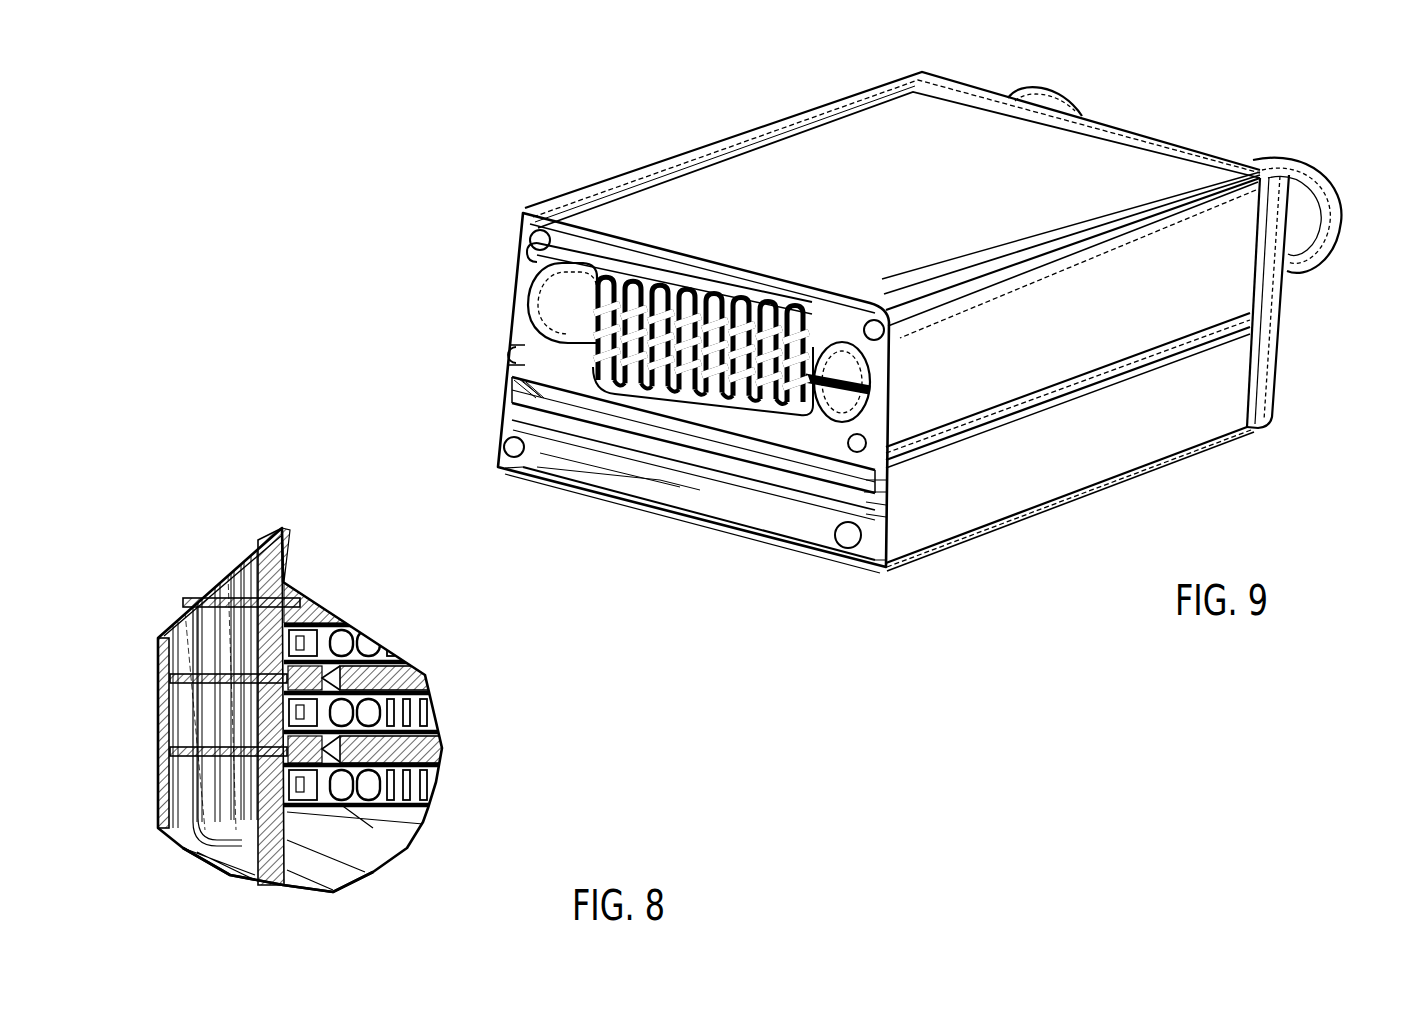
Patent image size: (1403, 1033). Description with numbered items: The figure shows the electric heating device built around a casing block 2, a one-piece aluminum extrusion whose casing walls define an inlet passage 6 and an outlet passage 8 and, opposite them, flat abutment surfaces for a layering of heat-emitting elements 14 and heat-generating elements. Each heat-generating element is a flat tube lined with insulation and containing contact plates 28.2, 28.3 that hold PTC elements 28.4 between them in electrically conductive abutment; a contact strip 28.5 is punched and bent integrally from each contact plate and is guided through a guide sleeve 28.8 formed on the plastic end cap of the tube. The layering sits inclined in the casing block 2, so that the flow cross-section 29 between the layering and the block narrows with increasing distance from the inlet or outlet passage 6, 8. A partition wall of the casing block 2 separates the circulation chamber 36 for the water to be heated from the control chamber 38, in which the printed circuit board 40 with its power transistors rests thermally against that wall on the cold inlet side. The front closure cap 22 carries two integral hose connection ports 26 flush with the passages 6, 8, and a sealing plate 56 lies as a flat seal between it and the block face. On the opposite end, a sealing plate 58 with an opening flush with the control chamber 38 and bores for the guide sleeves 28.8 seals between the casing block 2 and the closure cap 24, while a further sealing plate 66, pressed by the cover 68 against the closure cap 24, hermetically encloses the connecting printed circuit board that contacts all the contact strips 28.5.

In FIG. 9, the casing block 2 is at (748, 120).
In FIG. 9, the inlet passage 6 is at (562, 316).
In FIG. 9, the outlet passage 8 is at (833, 368).
In FIG. 8, the heat-emitting element 14 is at (432, 792).
In FIG. 9, the closure cap 22 is at (1264, 400).
In FIG. 8, the closure cap 24 is at (235, 868).
In FIG. 9, the connection port 26 is at (1072, 100).
In FIG. 8, the contact plate 28.2 is at (445, 727).
In FIG. 8, the contact plate 28.3 is at (447, 765).
In FIG. 8, the PTC element 28.4 is at (447, 750).
In FIG. 8, the contact strip 28.5 is at (160, 752).
In FIG. 8, the guide sleeve 28.8 is at (288, 576).
In FIG. 9, the flow cross-section 29 is at (712, 406).
In FIG. 9, the circulation chamber 36 is at (640, 388).
In FIG. 9, the control chamber 38 is at (678, 477).
In FIG. 9, the printed circuit board 40 is at (740, 463).
In FIG. 9, the sealing plate 56 is at (1240, 432).
In FIG. 8, the sealing plate 58 is at (266, 884).
In FIG. 8, the sealing plate 66 is at (168, 625).
In FIG. 8, the cover 68 is at (165, 678).